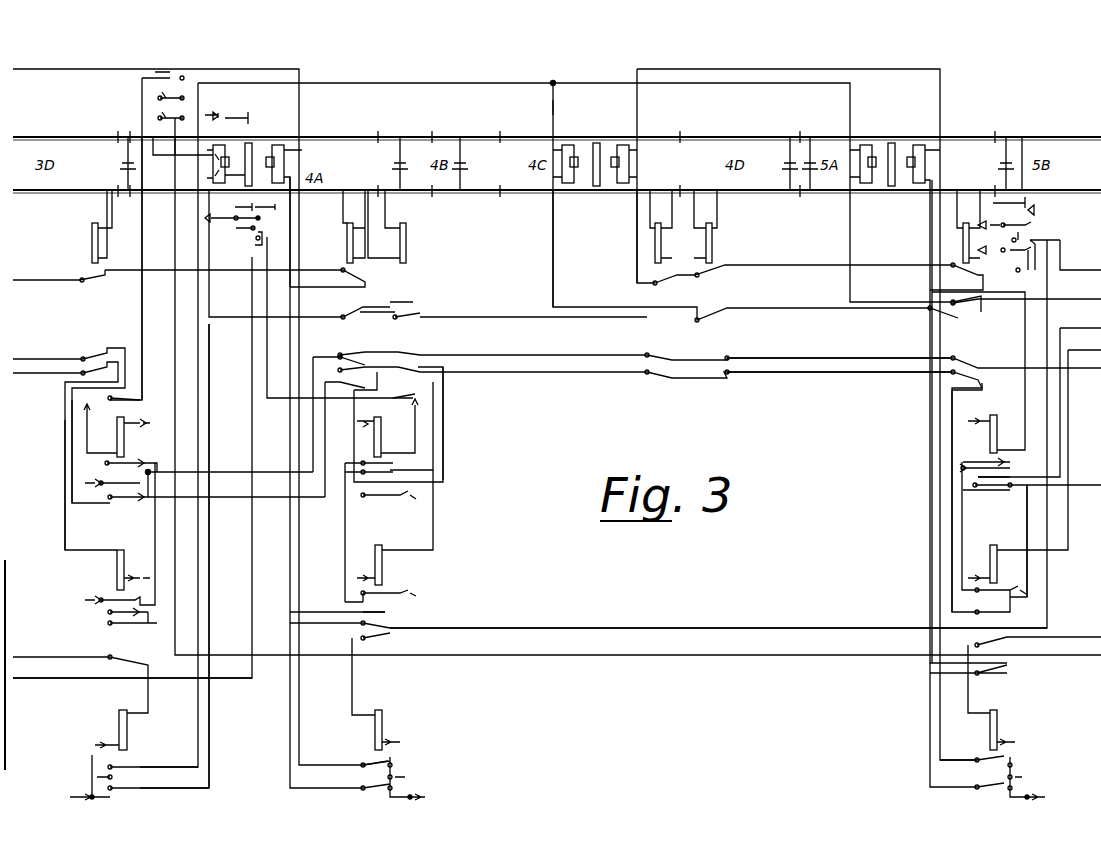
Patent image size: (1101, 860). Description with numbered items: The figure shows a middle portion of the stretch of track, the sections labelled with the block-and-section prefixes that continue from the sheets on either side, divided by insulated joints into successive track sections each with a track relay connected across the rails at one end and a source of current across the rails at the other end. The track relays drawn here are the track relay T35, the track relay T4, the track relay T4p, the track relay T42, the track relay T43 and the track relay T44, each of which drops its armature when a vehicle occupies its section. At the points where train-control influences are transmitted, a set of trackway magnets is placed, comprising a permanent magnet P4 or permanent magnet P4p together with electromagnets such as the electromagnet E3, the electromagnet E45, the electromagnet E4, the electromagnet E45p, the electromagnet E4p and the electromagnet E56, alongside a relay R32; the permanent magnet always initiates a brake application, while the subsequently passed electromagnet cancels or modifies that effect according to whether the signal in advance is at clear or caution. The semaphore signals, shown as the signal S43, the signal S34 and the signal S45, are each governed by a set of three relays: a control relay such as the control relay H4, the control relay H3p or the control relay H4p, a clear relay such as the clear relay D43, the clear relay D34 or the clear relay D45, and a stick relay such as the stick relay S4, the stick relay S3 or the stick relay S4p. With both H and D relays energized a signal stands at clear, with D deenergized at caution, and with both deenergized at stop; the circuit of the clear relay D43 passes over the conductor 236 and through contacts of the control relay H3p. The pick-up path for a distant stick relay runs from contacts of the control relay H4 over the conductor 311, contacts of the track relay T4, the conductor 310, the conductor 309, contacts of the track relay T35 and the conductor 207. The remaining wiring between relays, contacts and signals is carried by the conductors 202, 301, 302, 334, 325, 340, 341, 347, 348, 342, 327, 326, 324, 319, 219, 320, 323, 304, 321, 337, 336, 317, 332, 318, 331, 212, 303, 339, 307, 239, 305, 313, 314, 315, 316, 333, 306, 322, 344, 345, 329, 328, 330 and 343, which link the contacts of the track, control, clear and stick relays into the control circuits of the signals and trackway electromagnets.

The conductor 202 is at (56, 76).
The conductor 301 is at (459, 88).
The conductor 302 is at (768, 75).
The conductor 334 is at (552, 108).
The conductor 325 is at (553, 240).
The conductor 340 is at (638, 238).
The conductor 341 is at (810, 269).
The conductor 347 is at (810, 311).
The conductor 348 is at (890, 301).
The conductor 342 is at (982, 292).
The conductor 327 is at (1092, 297).
The conductor 326 is at (1026, 303).
The conductor 324 is at (1092, 350).
The conductor 319 is at (1072, 366).
The conductor 219 is at (59, 270).
The conductor 320 is at (135, 274).
The conductor 323 is at (290, 261).
The conductor 304 is at (209, 302).
The conductor 321 is at (366, 300).
The conductor 337 is at (392, 298).
The conductor 336 is at (498, 310).
The conductor 317 is at (499, 358).
The conductor 332 is at (496, 375).
The conductor 318 is at (849, 360).
The conductor 331 is at (849, 375).
The conductor 207 is at (55, 360).
The conductor 212 is at (28, 376).
The conductor 303 is at (143, 325).
The conductor 339 is at (175, 361).
The conductor 307 is at (254, 350).
The conductor 239 is at (252, 380).
The conductor 305 is at (209, 442).
The conductor 309 is at (72, 448).
The conductor 313 is at (65, 470).
The conductor 314 is at (246, 471).
The conductor 310 is at (244, 500).
The conductor 315 is at (333, 476).
The conductor 311 is at (354, 405).
The conductor 316 is at (438, 458).
The conductor 333 is at (433, 540).
The conductor 236 is at (43, 651).
The conductor 306 is at (209, 717).
The conductor 322 is at (290, 700).
The conductor 344 is at (470, 627).
The conductor 345 is at (352, 692).
The conductor 329 is at (1100, 486).
The conductor 328 is at (1026, 520).
The conductor 330 is at (952, 545).
The conductor 343 is at (930, 727).
The electromagnet E3 is at (213, 151).
The electromagnet E45 is at (292, 151).
The electromagnet E4 is at (565, 150).
The electromagnet E45p is at (621, 150).
The electromagnet E4p is at (863, 150).
The electromagnet E56 is at (957, 390).
The relay R3² R32 is at (250, 143).
The permanent magnet P4 is at (594, 142).
The permanent magnet P4p is at (892, 141).
The semaphore signal S43 is at (226, 109).
The semaphore signal S34 is at (240, 221).
The semaphore signal S45 is at (1021, 230).
The track relay T35 is at (92, 228).
The track relay T4 is at (347, 227).
The track relay T4p is at (406, 228).
The track relay T42 is at (660, 222).
The track relay T43 is at (708, 227).
The track relay T44 is at (965, 221).
The stick relay S4 is at (204, 448).
The stick relay S3 is at (395, 426).
The stick relay S4p is at (993, 506).
The control relay H4 is at (696, 434).
The control relay H3p is at (121, 544).
The control relay H4p is at (997, 579).
The clear relay D43 is at (139, 755).
The clear relay D34 is at (394, 755).
The clear relay D45 is at (1011, 755).